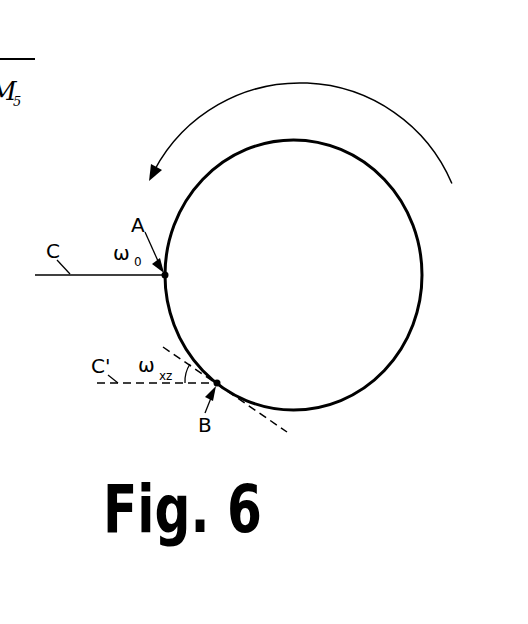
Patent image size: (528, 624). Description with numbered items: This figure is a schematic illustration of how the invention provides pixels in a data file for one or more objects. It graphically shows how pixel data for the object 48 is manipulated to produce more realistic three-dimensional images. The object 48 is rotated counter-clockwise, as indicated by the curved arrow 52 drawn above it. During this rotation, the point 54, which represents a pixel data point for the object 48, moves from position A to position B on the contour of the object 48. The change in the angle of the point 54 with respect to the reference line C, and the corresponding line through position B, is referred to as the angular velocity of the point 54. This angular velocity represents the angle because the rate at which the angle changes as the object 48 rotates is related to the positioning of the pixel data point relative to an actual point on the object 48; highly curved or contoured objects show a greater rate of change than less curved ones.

The object 48 is at (412, 270).
The arrow 52 is at (364, 97).
The point 54 is at (167, 275).